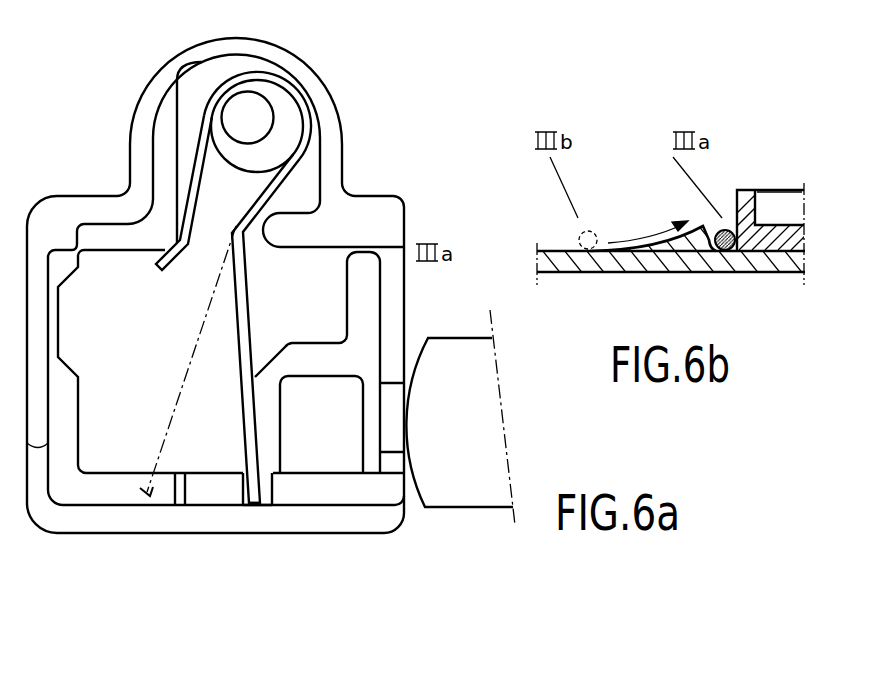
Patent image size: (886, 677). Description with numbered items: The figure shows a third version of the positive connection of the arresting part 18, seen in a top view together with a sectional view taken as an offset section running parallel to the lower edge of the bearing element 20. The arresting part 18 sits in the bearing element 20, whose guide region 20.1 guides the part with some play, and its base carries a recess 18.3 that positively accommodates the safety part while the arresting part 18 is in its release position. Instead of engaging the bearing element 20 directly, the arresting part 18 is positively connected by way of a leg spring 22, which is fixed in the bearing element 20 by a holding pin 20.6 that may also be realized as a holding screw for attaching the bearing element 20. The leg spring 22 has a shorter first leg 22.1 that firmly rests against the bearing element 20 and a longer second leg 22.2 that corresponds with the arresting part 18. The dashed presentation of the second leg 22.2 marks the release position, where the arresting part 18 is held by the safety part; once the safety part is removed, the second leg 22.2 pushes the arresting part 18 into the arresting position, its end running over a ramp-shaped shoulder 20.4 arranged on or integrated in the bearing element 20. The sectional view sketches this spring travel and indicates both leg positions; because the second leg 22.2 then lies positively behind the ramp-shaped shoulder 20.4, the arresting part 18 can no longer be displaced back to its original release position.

In FIG. 6a, the arresting part 18 is at (339, 422).
In FIG. 6b, the arresting part 18 is at (748, 197).
In FIG. 6b, the recess 18.3 is at (787, 198).
In FIG. 6a, the bearing element 20 is at (372, 213).
In FIG. 6b, the bearing element 20 is at (637, 262).
In FIG. 6a, the guide region 20.1 is at (486, 423).
In FIG. 6a, the ramp-shaped shoulder 20.4 is at (237, 490).
In FIG. 6b, the ramp-shaped shoulder 20.4 is at (705, 228).
In FIG. 6a, the holding pin 20.6 is at (248, 118).
In FIG. 6a, the leg spring 22 is at (306, 111).
In FIG. 6a, the first leg 22.1 is at (195, 195).
In FIG. 6a, the second leg 22.2 is at (153, 490).
In FIG. 6b, the second leg 22.2 is at (587, 240).